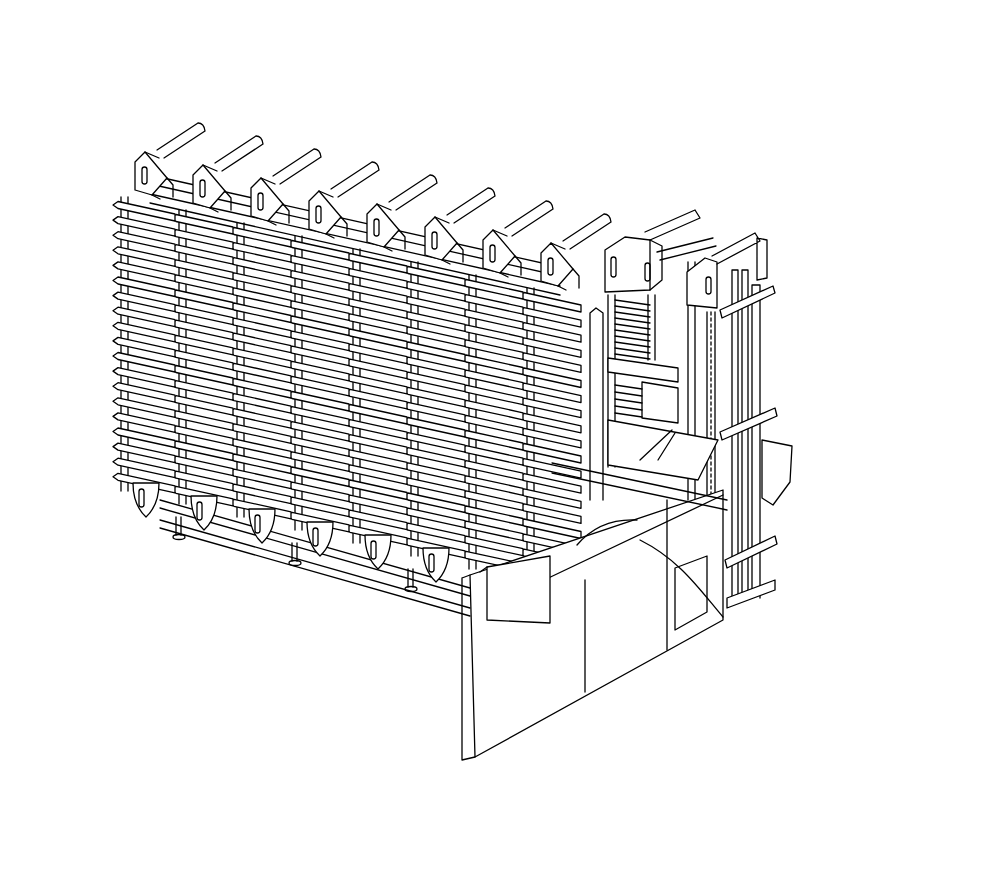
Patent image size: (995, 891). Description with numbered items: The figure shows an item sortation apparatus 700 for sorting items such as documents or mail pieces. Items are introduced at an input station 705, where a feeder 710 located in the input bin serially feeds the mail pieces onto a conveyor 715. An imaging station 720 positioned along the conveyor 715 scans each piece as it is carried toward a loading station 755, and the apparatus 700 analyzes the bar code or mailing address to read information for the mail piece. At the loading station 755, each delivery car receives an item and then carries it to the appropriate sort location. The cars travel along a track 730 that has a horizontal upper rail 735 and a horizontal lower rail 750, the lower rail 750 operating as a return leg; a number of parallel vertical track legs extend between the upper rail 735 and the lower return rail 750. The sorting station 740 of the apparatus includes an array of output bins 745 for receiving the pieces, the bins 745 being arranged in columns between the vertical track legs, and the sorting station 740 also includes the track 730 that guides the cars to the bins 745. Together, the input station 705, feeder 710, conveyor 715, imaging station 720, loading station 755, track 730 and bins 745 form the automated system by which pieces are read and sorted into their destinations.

The item sortation apparatus 700 is at (540, 52).
The input station 705 is at (604, 686).
The feeder 710 is at (550, 576).
The conveyor 715 is at (703, 495).
The imaging station 720 is at (756, 548).
The track 730 is at (571, 210).
The horizontal upper rail 735 is at (462, 210).
The sorting station 740 is at (297, 128).
The output bins 745 is at (136, 203).
The horizontal lower rail 750 is at (158, 492).
The loading station 755 is at (760, 472).